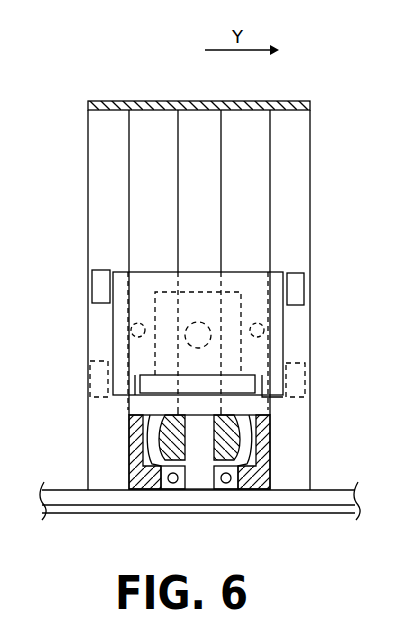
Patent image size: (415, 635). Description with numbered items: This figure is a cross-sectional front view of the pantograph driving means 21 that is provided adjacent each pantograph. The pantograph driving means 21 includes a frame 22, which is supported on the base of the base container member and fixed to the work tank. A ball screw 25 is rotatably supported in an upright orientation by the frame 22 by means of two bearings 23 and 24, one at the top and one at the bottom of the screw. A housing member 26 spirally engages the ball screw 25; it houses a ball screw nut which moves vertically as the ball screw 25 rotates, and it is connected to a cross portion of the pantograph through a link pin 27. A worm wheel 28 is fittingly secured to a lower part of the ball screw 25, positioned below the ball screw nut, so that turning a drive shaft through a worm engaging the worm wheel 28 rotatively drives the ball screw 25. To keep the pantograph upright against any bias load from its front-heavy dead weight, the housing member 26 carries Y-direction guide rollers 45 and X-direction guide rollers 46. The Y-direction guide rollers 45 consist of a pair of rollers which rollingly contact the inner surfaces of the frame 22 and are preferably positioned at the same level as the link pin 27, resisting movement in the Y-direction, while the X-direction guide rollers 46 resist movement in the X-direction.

The pantograph driving means 21 is at (300, 72).
The frame 22 is at (296, 175).
The bearing 23 is at (213, 104).
The bearing 24 is at (230, 490).
The ball screw 25 is at (221, 200).
The housing member 26 is at (137, 271).
The link pin 27 is at (198, 322).
The worm wheel 28 is at (230, 450).
The Y-direction guide rollers 45 is at (131, 333).
The X-direction guide rollers 46 is at (91, 287).